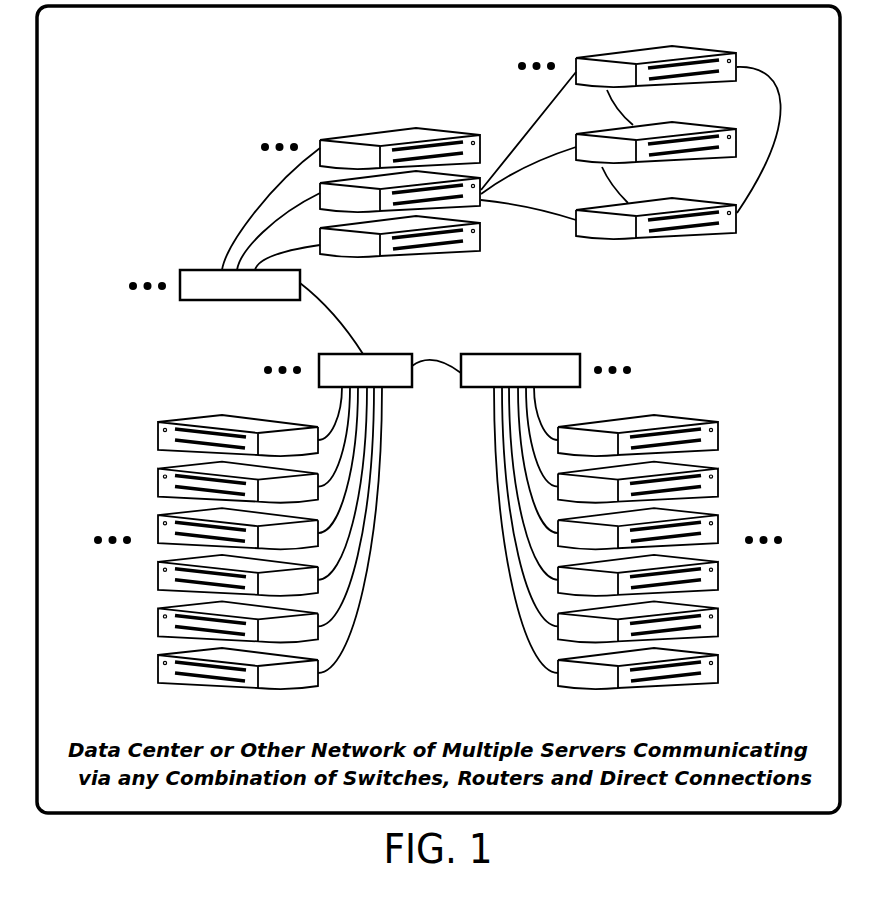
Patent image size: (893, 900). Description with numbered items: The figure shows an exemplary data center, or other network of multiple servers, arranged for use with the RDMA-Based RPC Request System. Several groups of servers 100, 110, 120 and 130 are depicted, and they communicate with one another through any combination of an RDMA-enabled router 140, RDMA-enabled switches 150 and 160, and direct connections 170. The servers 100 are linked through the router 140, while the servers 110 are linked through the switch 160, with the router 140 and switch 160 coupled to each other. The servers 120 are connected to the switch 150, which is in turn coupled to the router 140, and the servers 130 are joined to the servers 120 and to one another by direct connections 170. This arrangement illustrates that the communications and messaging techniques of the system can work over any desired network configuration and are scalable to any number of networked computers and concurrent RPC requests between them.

The servers 100 is at (130, 455).
The servers 110 is at (745, 455).
The servers 120 is at (320, 103).
The servers 130 is at (716, 254).
The RDMA-enabled router 140 is at (403, 354).
The RDMA-enabled switch 150 is at (210, 270).
The RDMA-enabled switch 160 is at (530, 354).
The direct connections 170 is at (541, 232).